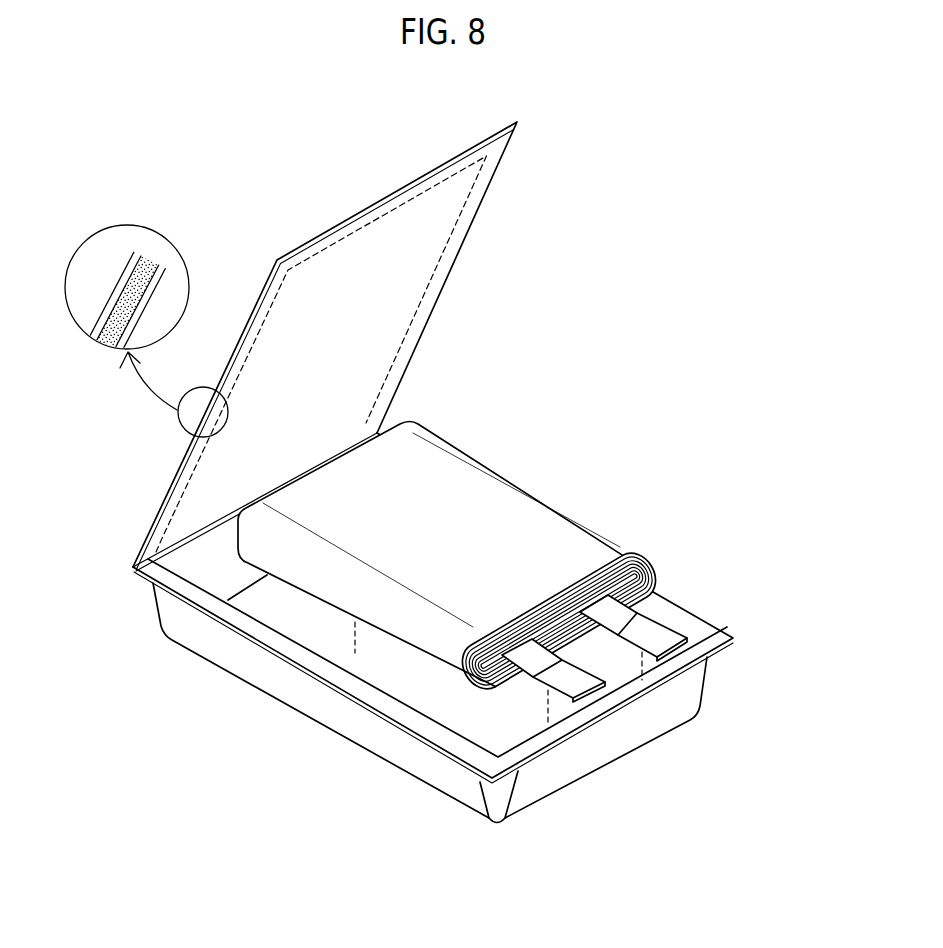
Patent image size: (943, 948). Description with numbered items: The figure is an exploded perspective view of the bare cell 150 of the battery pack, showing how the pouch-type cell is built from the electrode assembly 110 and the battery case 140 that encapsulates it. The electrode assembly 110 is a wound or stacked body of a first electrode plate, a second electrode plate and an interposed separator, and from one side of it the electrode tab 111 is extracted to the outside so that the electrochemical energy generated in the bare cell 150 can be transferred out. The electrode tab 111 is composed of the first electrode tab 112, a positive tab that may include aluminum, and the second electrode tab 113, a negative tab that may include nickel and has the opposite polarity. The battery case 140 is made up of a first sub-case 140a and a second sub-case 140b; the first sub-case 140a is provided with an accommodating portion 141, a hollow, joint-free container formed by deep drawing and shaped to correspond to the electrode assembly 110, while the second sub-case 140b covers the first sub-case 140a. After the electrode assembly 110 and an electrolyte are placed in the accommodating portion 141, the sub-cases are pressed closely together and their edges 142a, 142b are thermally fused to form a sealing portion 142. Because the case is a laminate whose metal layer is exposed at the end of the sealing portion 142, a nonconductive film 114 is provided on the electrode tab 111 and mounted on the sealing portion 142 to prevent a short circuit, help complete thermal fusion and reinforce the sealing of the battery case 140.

The electrode assembly 110 is at (525, 632).
The electrode tab 111 is at (612, 723).
The first electrode tab 112 is at (568, 745).
The second electrode tab 113 is at (678, 638).
The film 114 is at (547, 678).
The battery case 140 is at (375, 474).
The first sub-case 140a is at (433, 629).
The second sub-case 140b is at (283, 345).
The accommodating portion 141 is at (478, 715).
The sealing portion 142 is at (198, 554).
The edge of first sub-case 142a is at (232, 618).
The edge of second sub-case 142b is at (132, 562).
The bare cell 150 is at (690, 224).